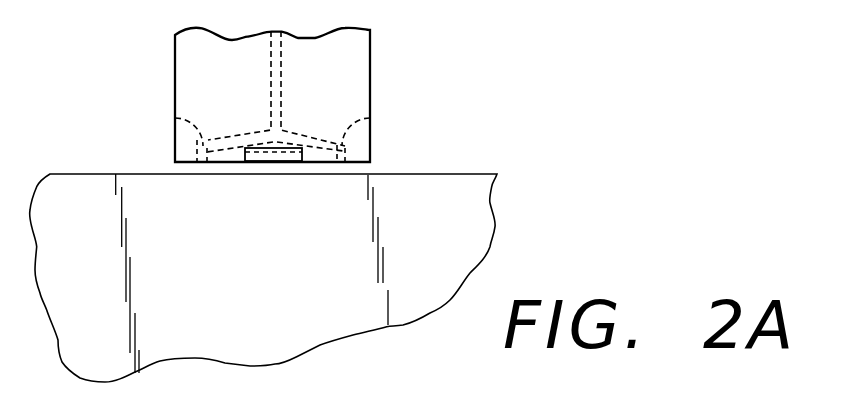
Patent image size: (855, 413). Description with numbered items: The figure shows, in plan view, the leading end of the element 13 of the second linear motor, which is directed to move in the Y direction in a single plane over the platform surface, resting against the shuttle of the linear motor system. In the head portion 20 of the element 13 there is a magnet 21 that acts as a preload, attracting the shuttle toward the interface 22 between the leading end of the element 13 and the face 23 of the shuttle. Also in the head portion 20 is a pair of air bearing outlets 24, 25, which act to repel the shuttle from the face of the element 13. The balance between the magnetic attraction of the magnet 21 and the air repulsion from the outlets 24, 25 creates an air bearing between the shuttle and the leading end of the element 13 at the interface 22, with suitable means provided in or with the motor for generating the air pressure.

The element 13 is at (365, 76).
The head portion 20 is at (240, 137).
The magnet 21 is at (300, 132).
The interface 22 is at (313, 165).
The face 23 is at (93, 173).
The air bearing outlet 24 is at (178, 122).
The air bearing outlet 25 is at (373, 126).